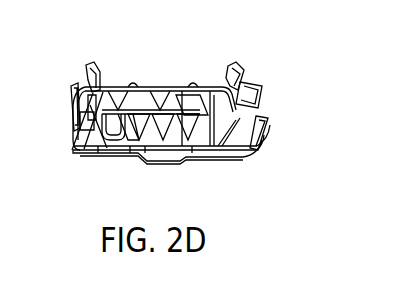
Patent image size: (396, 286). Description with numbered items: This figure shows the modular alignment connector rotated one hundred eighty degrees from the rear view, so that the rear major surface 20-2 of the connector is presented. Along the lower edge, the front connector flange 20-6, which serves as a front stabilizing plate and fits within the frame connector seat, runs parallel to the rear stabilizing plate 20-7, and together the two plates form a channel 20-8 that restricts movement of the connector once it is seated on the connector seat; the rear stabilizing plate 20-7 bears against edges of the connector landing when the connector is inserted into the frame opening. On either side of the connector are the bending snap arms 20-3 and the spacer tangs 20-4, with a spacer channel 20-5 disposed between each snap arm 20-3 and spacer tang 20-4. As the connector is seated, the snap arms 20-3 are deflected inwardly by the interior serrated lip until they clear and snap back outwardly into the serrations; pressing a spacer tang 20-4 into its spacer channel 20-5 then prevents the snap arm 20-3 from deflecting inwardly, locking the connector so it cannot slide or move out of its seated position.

The rear major surface 20-2 is at (155, 100).
The bending snap arm 20-3 is at (72, 93).
The spacer tang 20-4 is at (91, 67).
The spacer channel 20-5 is at (82, 118).
The front connector flange 20-6 is at (157, 160).
The rear stabilizing plate 20-7 is at (98, 150).
The channel 20-8 is at (137, 152).